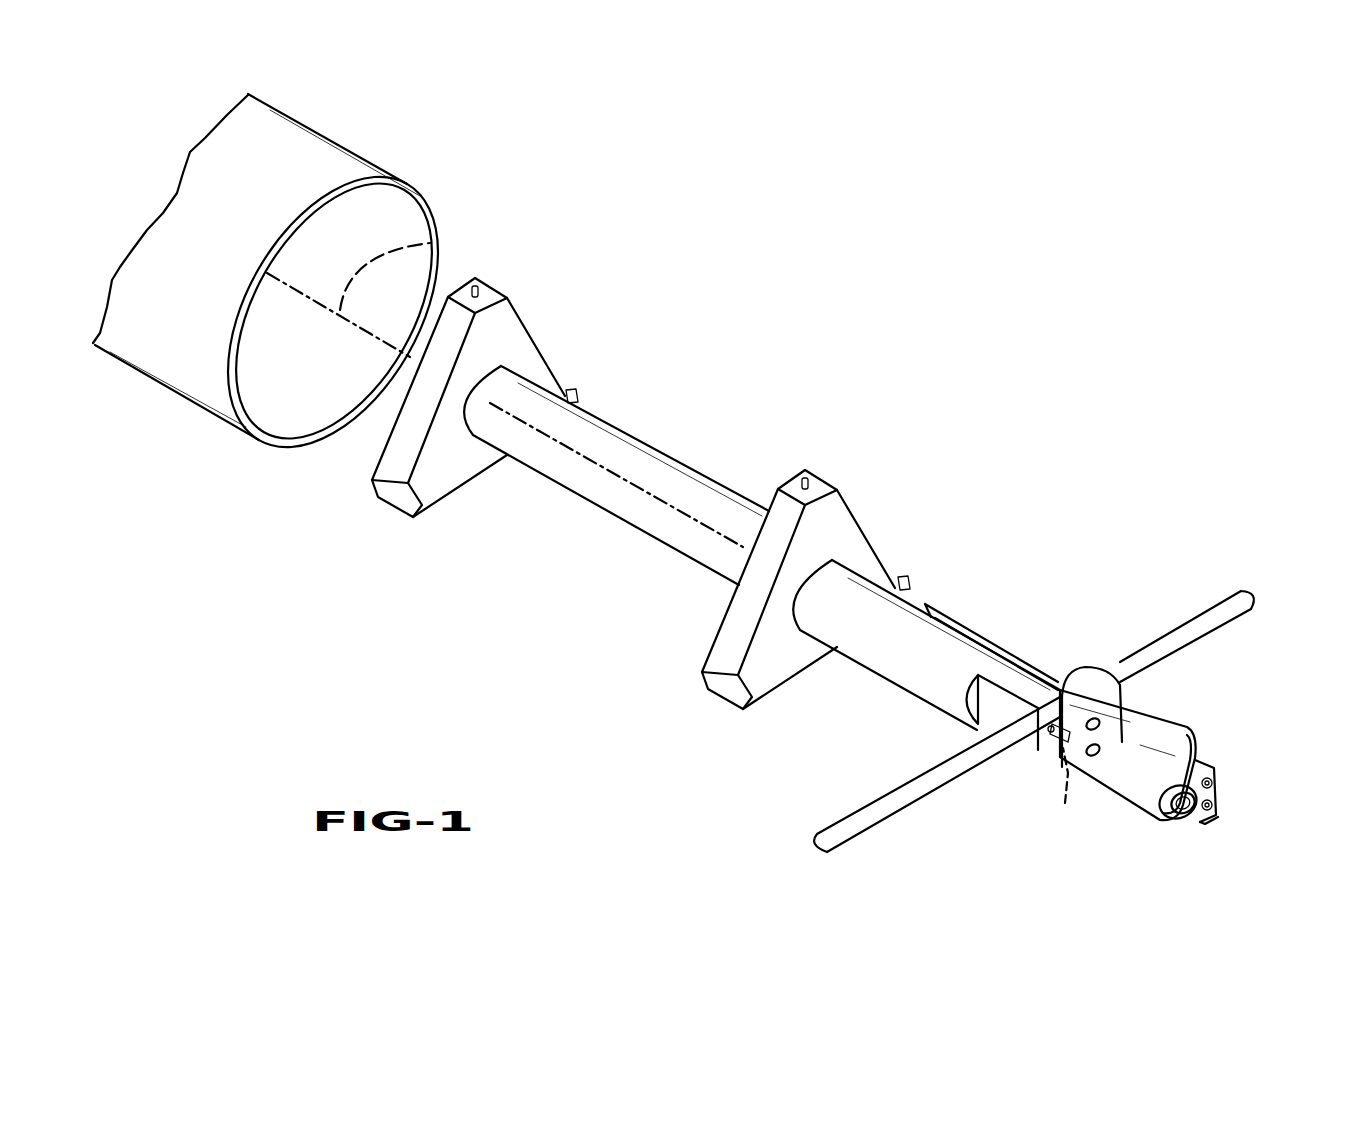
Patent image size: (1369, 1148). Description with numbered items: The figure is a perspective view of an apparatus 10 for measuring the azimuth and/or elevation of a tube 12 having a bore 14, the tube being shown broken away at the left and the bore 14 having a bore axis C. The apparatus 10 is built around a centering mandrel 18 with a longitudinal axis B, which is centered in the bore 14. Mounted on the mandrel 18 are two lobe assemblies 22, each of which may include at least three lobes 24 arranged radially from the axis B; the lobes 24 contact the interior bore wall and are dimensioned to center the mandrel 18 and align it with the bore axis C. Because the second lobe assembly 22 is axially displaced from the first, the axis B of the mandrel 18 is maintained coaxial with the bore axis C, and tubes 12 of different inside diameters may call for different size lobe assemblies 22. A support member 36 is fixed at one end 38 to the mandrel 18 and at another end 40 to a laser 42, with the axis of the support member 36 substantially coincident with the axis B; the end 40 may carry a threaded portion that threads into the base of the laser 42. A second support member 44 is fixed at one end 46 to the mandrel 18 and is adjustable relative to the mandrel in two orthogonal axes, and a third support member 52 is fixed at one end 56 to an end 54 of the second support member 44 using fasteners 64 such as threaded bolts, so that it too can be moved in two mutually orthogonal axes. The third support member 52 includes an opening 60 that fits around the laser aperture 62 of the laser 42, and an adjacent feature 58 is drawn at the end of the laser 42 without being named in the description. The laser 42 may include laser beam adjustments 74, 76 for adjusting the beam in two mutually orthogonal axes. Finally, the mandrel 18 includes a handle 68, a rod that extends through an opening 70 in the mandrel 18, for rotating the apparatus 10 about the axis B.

The apparatus 10 is at (1074, 323).
The tube 12 is at (208, 422).
The bore 14 is at (357, 222).
The bore axis C is at (430, 243).
The longitudinal axis B is at (607, 467).
The centering mandrel 18 is at (714, 477).
The lobe assembly 22 is at (484, 490).
The lobes 24 is at (488, 297).
The support member 36 is at (1053, 737).
The end 38 is at (1050, 727).
The end 40 is at (1065, 792).
The laser 42 is at (1109, 799).
The second support member 44 is at (1001, 631).
The end 46 is at (940, 612).
The third support member 52 is at (1219, 816).
The end 54 is at (1202, 751).
The end 56 is at (1210, 770).
The boss 58 is at (1160, 808).
The opening 60 is at (1173, 804).
The laser aperture 62 is at (1204, 814).
The fasteners 64 is at (1218, 788).
The handle 68 is at (873, 812).
The opening 70 is at (1013, 720).
The laser beam adjustment 74 is at (1090, 720).
The laser beam adjustment 76 is at (1097, 745).